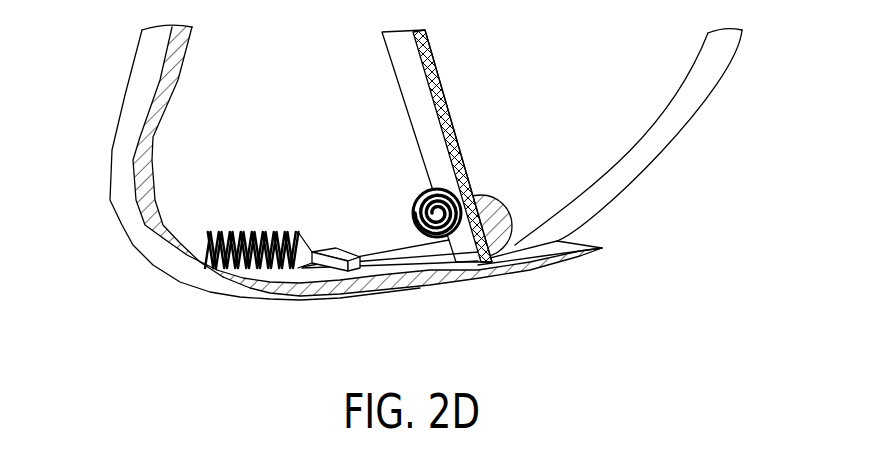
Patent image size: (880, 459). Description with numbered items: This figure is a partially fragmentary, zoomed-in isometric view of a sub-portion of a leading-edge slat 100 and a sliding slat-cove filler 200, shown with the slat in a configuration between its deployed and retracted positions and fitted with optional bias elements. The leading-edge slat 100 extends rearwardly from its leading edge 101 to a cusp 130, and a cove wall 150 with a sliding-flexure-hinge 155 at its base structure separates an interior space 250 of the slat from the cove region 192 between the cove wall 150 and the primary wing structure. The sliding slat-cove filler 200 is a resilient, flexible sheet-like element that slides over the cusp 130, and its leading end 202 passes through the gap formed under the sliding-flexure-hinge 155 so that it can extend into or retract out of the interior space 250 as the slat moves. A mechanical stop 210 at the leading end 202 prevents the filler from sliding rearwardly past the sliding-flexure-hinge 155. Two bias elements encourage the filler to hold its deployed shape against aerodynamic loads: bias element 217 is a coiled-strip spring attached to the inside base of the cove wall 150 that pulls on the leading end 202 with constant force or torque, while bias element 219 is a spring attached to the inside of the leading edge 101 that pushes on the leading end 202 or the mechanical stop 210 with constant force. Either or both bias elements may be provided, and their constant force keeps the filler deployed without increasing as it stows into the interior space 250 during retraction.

The leading-edge slat 100 is at (137, 83).
The leading edge 101 is at (122, 192).
The cusp 130 is at (590, 252).
The cove wall 150 is at (432, 78).
The sliding-flexure-hinge 155 is at (484, 196).
The cove region 192 is at (561, 102).
The sliding slat-cove filler 200 is at (648, 170).
The leading end 202 is at (375, 278).
The mechanical stop 210 is at (330, 244).
The bias element 217 is at (397, 248).
The bias element 219 is at (240, 230).
The interior space 250 is at (300, 104).